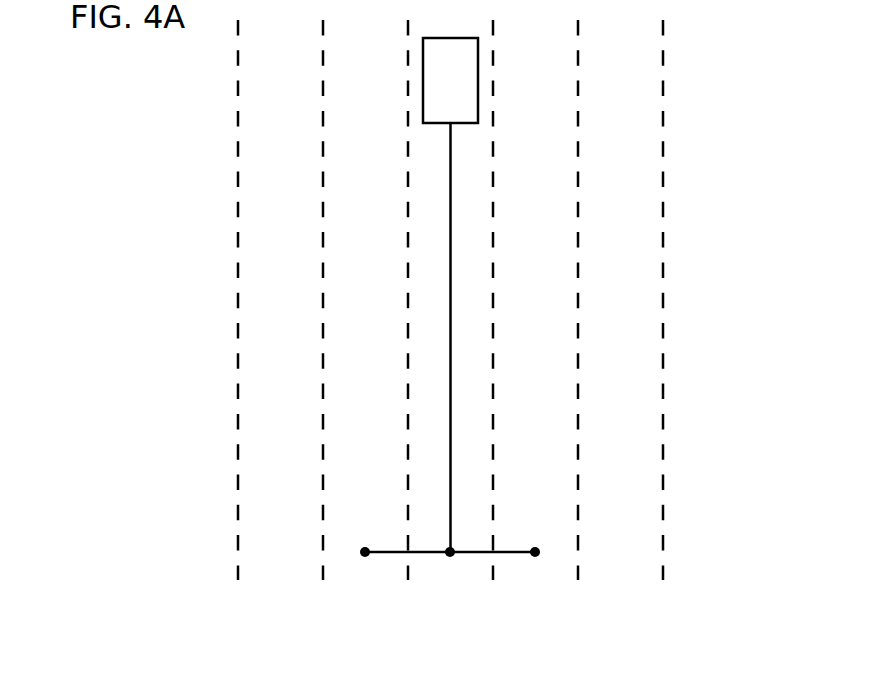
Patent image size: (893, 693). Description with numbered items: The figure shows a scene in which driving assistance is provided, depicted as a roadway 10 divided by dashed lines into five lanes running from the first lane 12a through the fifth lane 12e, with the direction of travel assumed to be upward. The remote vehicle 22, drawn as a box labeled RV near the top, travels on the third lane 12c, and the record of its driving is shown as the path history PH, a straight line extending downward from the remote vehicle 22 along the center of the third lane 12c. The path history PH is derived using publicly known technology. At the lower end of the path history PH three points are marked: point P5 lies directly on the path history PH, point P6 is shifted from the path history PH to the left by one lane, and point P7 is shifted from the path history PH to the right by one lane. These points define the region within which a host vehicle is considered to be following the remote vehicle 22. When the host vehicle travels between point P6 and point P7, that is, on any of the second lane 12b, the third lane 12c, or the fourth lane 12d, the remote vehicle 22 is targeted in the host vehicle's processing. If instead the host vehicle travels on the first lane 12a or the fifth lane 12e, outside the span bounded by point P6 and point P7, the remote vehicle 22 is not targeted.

The substrate / display panel 10 is at (485, 329).
The first lane 12a is at (282, 552).
The second lane 12b is at (379, 566).
The third lane 12c is at (464, 566).
The fourth lane 12d is at (549, 566).
The fifth lane 12e is at (618, 553).
The remote vehicle 22 is at (478, 70).
The path history PH is at (451, 343).
The point P5 is at (447, 557).
The point P6 is at (362, 557).
The point P7 is at (532, 557).